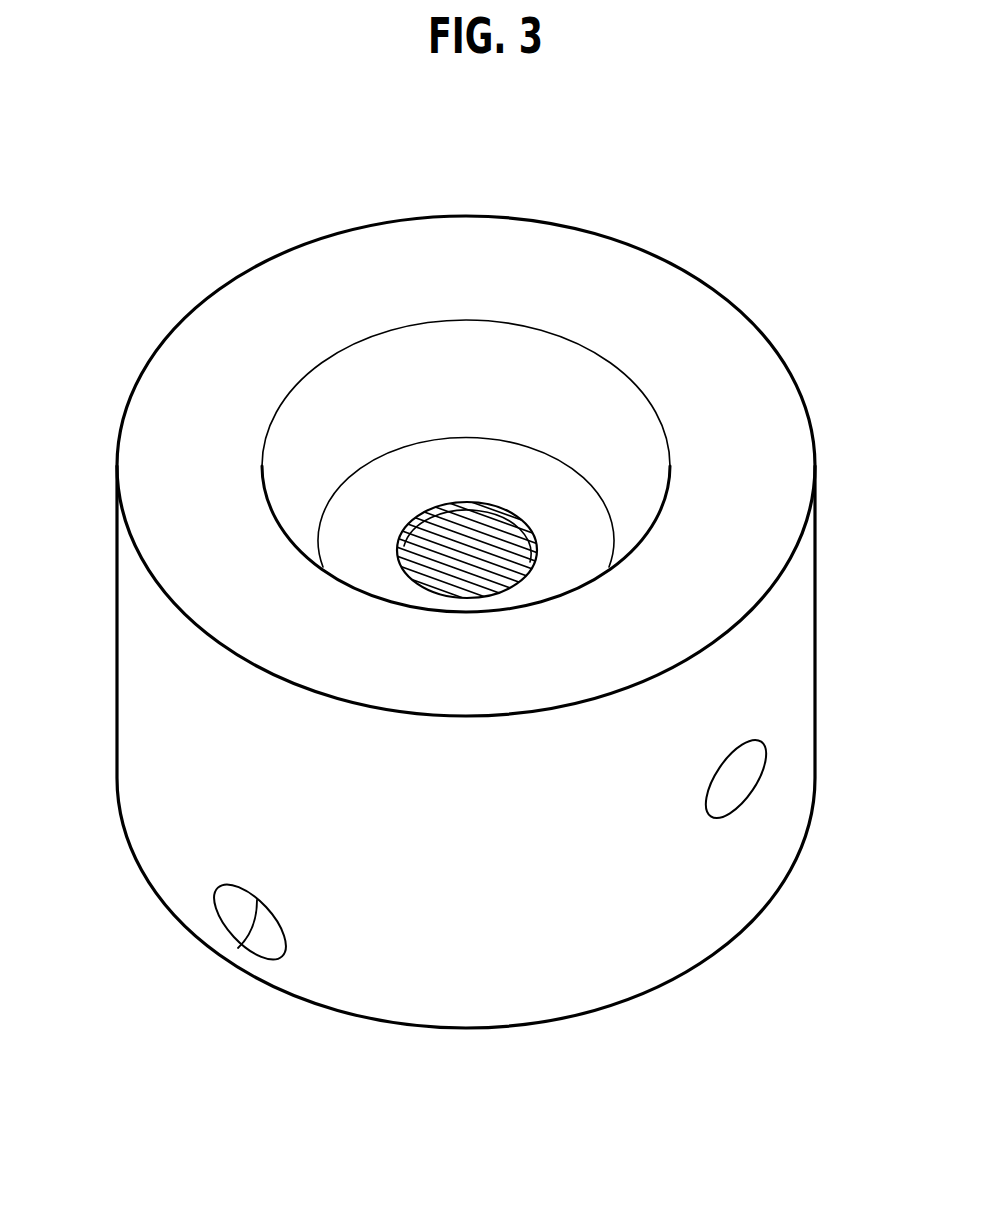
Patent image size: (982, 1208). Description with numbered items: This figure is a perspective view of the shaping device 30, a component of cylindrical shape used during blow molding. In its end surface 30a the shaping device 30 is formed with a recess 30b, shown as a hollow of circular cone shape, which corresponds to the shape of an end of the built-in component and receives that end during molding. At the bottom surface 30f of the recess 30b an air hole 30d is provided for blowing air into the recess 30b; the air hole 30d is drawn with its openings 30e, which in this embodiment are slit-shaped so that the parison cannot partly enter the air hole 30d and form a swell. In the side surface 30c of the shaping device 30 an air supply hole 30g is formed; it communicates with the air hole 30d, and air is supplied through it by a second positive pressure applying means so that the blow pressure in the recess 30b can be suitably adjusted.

The shaping device 30 is at (463, 569).
The end surface 30a is at (717, 388).
The recess 30b is at (357, 393).
The side surface 30c is at (169, 822).
The air hole 30d is at (430, 580).
The openings 30e is at (467, 520).
The bottom surface 30f is at (557, 498).
The air supply hole 30g is at (246, 938).